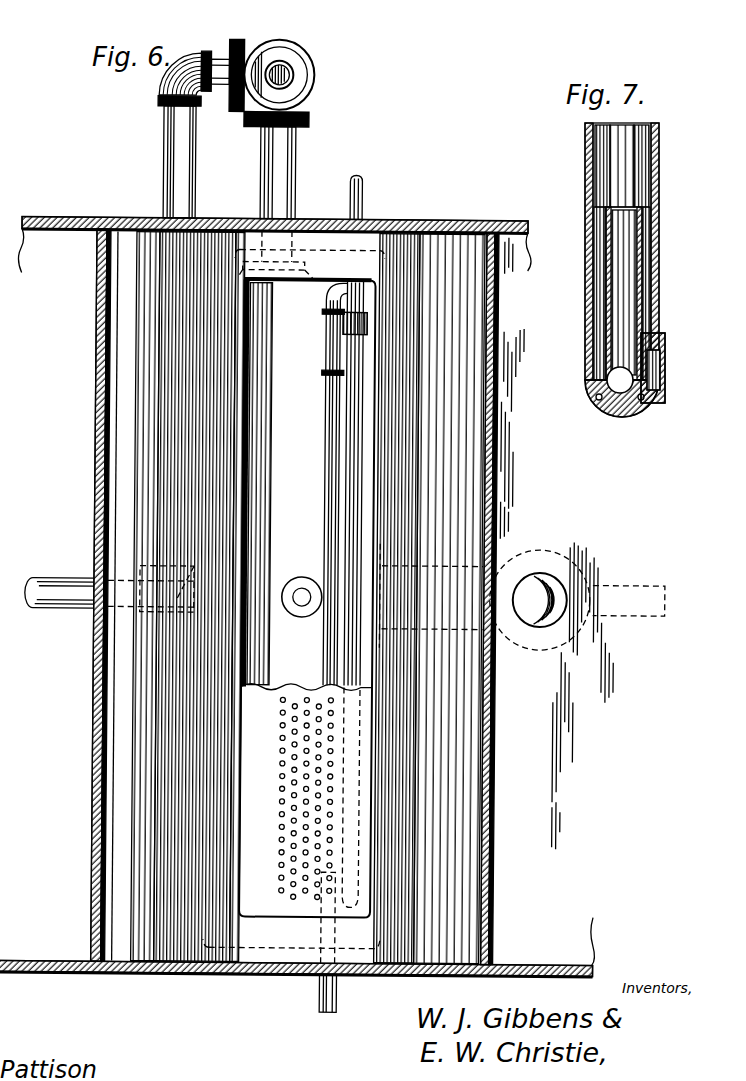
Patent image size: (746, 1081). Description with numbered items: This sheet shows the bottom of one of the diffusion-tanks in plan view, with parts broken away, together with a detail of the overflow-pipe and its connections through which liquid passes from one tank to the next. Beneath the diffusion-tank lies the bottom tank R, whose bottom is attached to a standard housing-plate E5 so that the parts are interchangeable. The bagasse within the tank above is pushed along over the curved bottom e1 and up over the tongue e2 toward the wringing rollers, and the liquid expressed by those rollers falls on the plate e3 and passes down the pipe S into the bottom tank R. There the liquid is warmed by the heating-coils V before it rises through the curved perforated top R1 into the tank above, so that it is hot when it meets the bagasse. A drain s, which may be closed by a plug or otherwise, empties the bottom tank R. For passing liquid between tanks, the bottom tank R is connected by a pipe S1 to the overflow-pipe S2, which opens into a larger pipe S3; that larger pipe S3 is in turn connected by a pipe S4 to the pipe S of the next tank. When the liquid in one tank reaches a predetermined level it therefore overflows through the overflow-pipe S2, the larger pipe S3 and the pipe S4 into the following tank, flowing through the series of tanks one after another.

In FIG. 6, the pipe S4 is at (220, 53).
In FIG. 7, the pipe S4 is at (666, 352).
In FIG. 6, the larger pipe S3 is at (277, 42).
In FIG. 7, the larger pipe S3 is at (640, 155).
In FIG. 6, the overflow-pipe S2 is at (290, 74).
In FIG. 7, the overflow-pipe S2 is at (625, 235).
In FIG. 6, the pipe S1 is at (296, 171).
In FIG. 7, the pipe S1 is at (618, 393).
In FIG. 6, the pipe S is at (540, 572).
In FIG. 6, the drain s is at (308, 586).
In FIG. 6, the heating-coils V is at (330, 396).
In FIG. 6, the bottom tank R is at (344, 599).
In FIG. 6, the curved perforated top R1 is at (273, 694).
In FIG. 6, the housing-plate E5 is at (428, 222).
In FIG. 6, the curved bottom e1 is at (178, 596).
In FIG. 6, the tongue e2 is at (498, 794).
In FIG. 6, the plate e3 is at (495, 599).